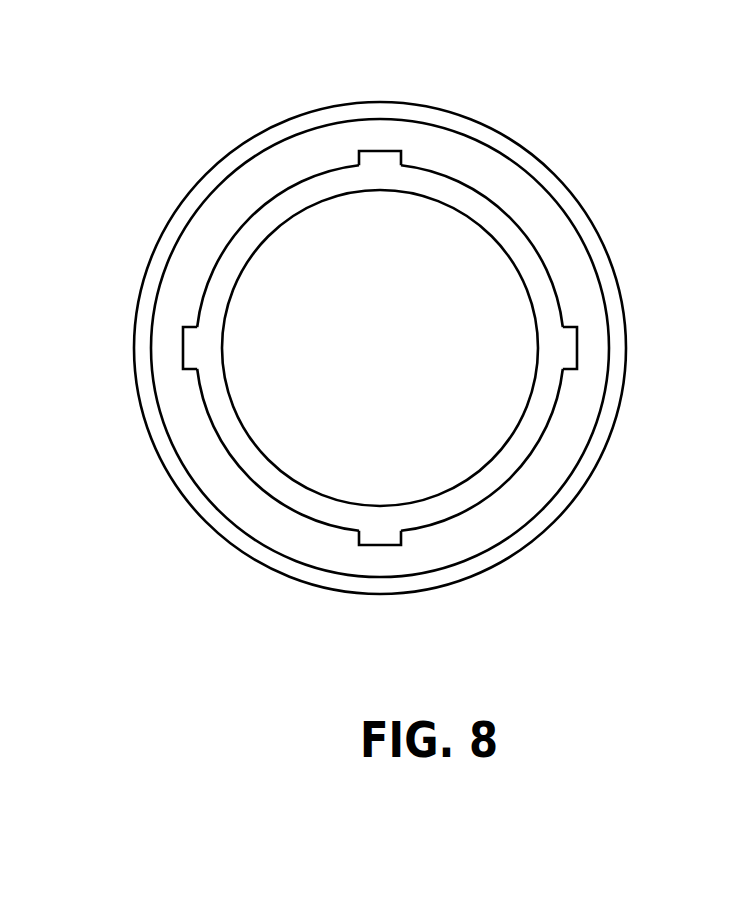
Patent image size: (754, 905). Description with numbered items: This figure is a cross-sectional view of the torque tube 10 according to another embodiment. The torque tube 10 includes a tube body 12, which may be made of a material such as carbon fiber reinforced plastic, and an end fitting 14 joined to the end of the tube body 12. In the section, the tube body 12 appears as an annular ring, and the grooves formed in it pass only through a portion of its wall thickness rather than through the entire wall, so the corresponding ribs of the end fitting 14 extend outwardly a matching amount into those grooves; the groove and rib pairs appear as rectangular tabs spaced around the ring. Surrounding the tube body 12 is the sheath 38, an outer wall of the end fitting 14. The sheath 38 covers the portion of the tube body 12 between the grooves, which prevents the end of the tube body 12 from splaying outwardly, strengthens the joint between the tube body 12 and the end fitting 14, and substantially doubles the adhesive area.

The torque tube 10 is at (274, 86).
The sheath 38 is at (188, 180).
The tube body 12 is at (518, 190).
The end fitting 14 is at (488, 123).